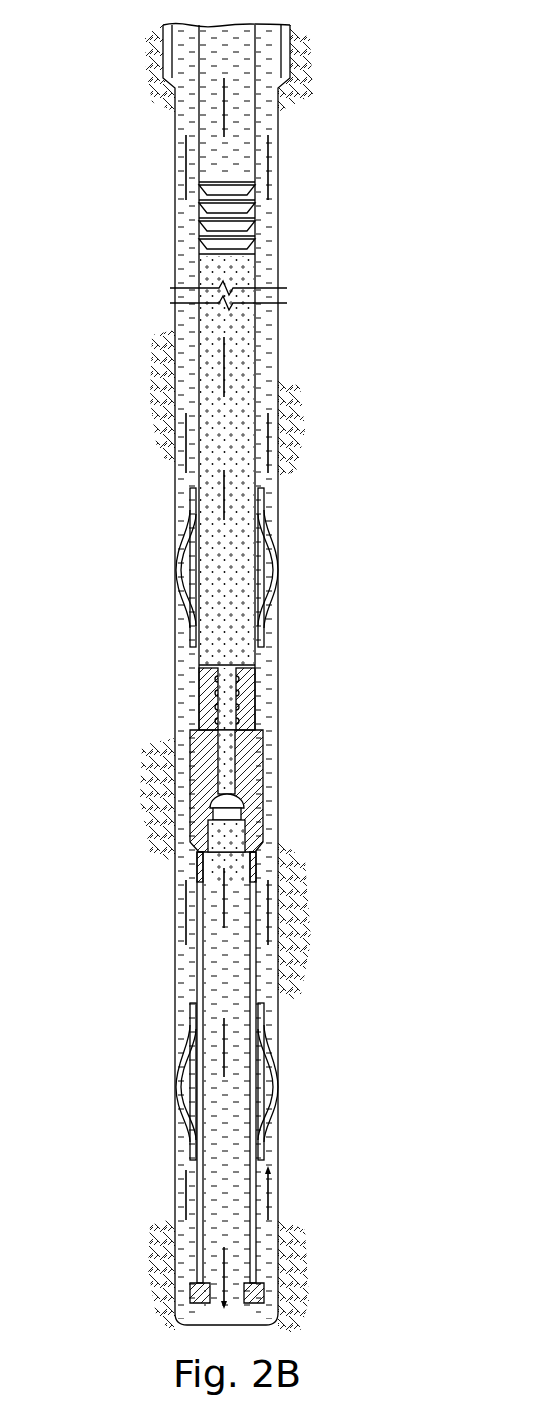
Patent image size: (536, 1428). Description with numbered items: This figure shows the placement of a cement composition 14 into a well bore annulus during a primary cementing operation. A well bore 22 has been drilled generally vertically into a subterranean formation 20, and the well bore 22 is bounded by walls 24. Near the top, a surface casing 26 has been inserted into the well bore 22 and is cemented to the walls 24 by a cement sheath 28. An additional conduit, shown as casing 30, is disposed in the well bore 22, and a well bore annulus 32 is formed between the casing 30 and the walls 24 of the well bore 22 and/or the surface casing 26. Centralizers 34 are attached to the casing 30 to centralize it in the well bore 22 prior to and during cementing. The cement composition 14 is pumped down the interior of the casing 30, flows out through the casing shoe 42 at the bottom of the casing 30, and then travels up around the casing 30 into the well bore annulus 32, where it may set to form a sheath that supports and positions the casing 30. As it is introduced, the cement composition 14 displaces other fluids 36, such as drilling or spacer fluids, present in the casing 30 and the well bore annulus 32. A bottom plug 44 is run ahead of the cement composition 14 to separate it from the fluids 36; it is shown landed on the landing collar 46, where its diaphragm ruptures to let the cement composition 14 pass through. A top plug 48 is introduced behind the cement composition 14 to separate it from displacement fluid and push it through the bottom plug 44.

The subterranean formation 20 is at (417, 692).
The well bore 22 is at (292, 506).
The walls 24 is at (283, 245).
The surface casing 26 is at (274, 50).
The cement sheath 28 is at (287, 97).
The casing 30 is at (255, 390).
The cement composition 14 is at (223, 353).
The well bore annulus 32 is at (183, 478).
The centralizers 34 is at (190, 1050).
The fluids 36 is at (225, 890).
The casing shoe 42 is at (190, 1267).
The bottom plug 44 is at (199, 690).
The landing collar 46 is at (190, 783).
The top plug 48 is at (205, 245).